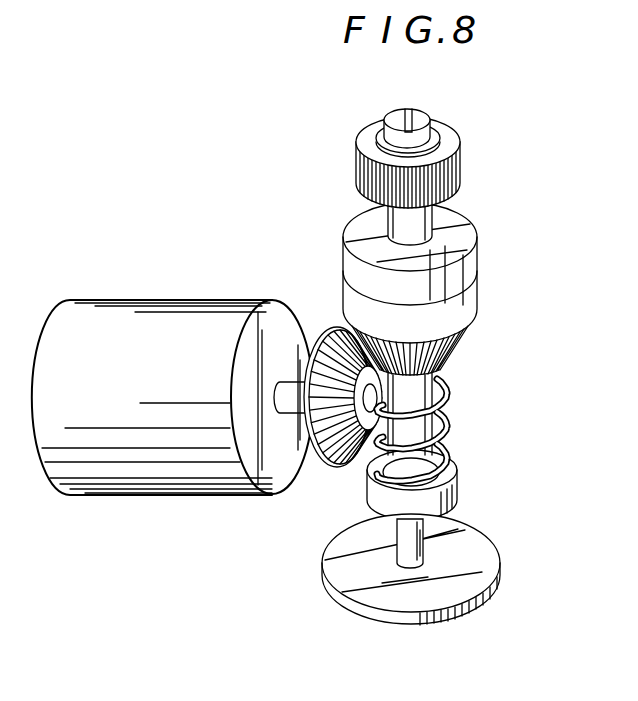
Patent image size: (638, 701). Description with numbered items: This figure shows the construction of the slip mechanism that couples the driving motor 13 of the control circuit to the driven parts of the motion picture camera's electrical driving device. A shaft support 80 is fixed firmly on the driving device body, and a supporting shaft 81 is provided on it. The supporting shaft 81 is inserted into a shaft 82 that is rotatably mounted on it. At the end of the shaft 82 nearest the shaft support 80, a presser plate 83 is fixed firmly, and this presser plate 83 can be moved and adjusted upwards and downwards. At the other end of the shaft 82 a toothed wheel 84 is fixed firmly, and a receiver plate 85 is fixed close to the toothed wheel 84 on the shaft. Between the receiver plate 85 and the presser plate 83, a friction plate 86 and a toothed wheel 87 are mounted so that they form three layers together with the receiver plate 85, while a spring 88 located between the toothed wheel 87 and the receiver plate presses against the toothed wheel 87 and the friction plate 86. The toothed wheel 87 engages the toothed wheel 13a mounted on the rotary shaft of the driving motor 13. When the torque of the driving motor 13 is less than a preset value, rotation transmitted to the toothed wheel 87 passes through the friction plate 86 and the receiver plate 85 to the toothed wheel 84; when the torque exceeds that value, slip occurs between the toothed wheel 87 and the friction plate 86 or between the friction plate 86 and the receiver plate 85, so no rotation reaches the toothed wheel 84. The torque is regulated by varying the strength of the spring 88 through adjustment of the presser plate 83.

The driving motor 13 is at (173, 318).
The toothed wheel 13a is at (330, 326).
The shaft support 80 is at (483, 563).
The supporting shaft 81 is at (423, 541).
The shaft 82 is at (445, 408).
The presser plate 83 is at (453, 494).
The toothed wheel 84 is at (458, 181).
The receiver plate 85 is at (476, 258).
The friction plate 86 is at (476, 298).
The toothed wheel 87 is at (462, 331).
The spring 88 is at (447, 422).